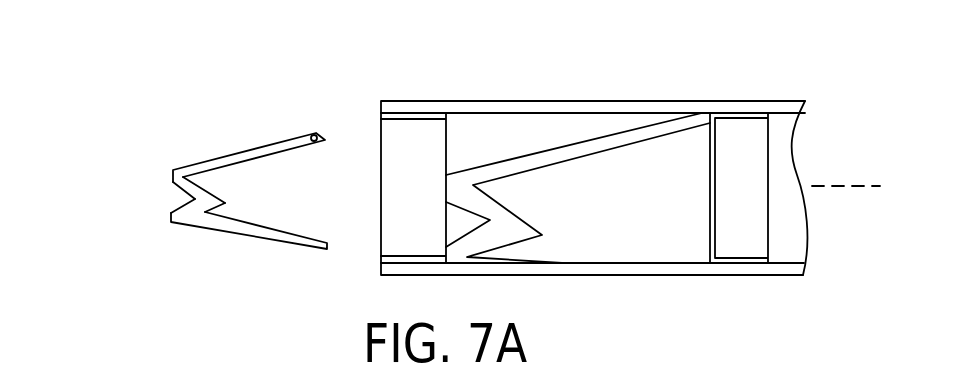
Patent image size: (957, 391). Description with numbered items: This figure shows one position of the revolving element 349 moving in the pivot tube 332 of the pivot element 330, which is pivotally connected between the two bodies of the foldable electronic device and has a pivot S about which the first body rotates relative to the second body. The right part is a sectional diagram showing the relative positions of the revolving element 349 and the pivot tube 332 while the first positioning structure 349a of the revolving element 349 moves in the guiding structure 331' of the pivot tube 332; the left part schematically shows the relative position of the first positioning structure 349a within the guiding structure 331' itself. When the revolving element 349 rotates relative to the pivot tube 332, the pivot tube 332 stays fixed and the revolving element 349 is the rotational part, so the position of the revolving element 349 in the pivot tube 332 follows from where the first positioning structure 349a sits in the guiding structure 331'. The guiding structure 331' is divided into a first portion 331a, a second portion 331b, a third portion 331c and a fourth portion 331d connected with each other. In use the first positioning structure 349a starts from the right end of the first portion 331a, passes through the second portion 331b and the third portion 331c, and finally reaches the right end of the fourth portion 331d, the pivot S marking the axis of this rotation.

The pivot element 330 is at (593, 188).
The pivot tube 332 is at (473, 107).
The guiding structure 331' is at (366, 154).
The first portion 331a is at (202, 163).
The second portion 331b is at (176, 188).
The third portion 331c is at (193, 199).
The fourth portion 331d is at (218, 230).
The revolving element 349 is at (755, 116).
The first positioning structure 349a is at (326, 137).
The pivot S is at (855, 186).